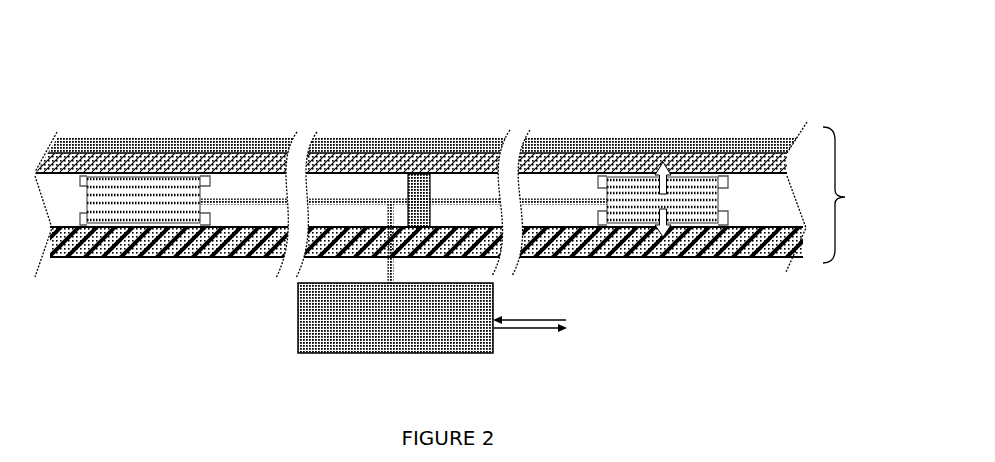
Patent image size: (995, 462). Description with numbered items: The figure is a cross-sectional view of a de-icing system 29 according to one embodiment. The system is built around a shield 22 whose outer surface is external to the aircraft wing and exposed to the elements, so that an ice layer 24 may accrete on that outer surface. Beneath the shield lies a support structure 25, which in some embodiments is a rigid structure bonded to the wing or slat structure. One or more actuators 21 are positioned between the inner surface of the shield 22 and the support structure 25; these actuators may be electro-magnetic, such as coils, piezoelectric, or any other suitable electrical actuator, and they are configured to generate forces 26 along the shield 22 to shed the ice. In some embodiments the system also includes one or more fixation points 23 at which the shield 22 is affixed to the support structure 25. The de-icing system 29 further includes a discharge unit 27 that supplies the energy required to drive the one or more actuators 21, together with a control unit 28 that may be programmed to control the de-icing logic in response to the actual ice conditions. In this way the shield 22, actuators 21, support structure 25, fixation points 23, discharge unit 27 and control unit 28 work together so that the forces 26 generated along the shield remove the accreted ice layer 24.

The actuators 21 is at (155, 188).
The shield 22 is at (395, 162).
The fixation points 23 is at (420, 180).
The ice layer 24 is at (683, 148).
The support structure 25 is at (252, 255).
The forces 26 is at (670, 233).
The discharge unit 27 is at (395, 278).
The control unit 28 is at (549, 326).
The de-icing system 29 is at (850, 195).